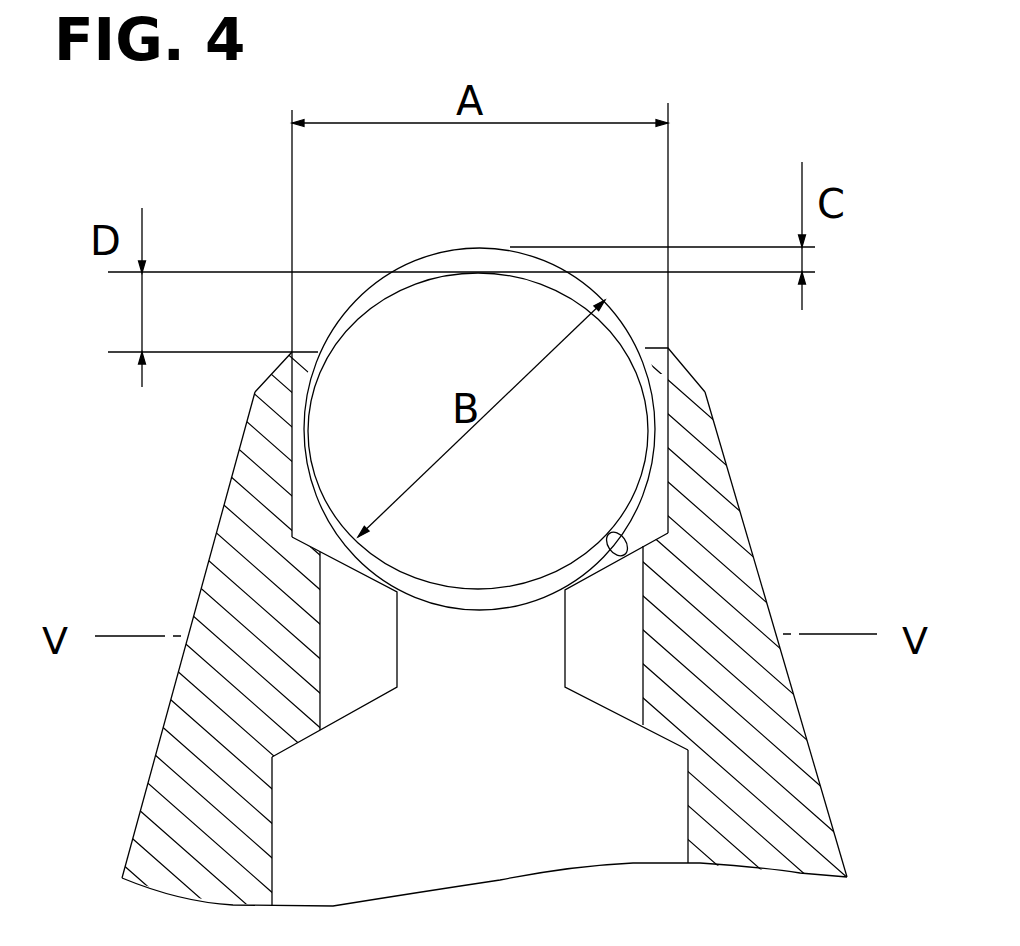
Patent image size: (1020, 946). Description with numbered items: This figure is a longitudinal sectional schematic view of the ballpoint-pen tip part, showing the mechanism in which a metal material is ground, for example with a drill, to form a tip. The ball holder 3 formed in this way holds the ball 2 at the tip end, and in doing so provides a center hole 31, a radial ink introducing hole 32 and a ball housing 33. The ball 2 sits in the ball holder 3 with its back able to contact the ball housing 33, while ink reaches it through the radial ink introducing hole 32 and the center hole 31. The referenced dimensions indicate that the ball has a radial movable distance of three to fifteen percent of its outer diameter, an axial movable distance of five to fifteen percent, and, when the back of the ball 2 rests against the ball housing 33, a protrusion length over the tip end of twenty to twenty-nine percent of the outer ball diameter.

The ball 2 is at (355, 431).
The ball holder 3 is at (655, 505).
The center hole 31 is at (475, 665).
The radial ink introducing hole 32 is at (612, 687).
The ball housing 33 is at (613, 530).